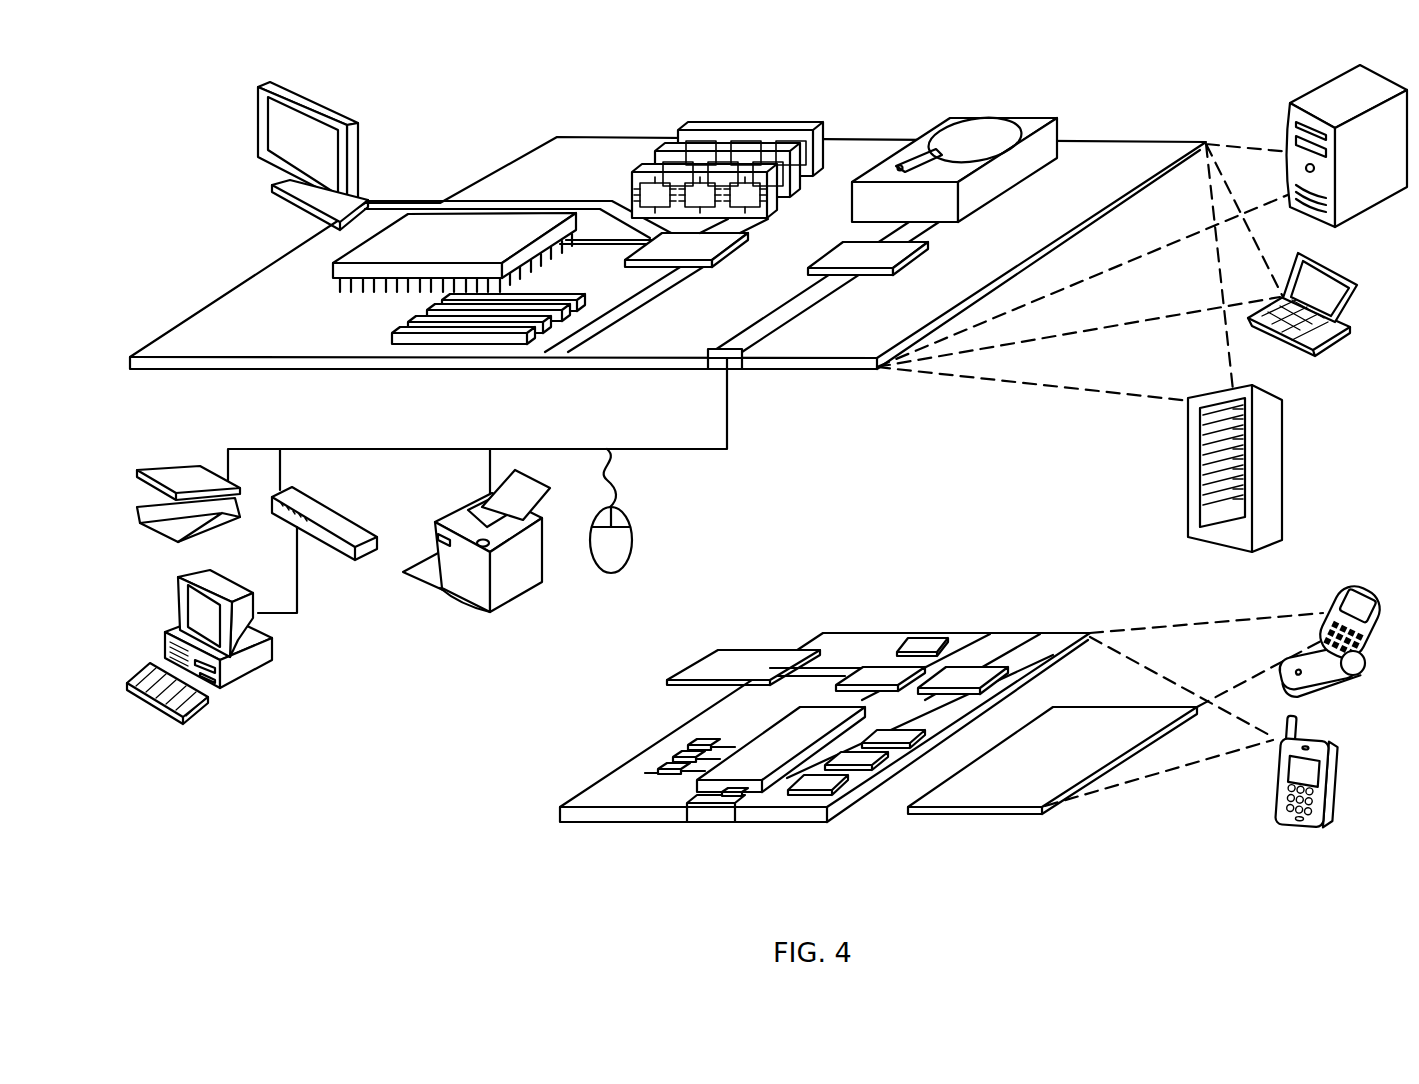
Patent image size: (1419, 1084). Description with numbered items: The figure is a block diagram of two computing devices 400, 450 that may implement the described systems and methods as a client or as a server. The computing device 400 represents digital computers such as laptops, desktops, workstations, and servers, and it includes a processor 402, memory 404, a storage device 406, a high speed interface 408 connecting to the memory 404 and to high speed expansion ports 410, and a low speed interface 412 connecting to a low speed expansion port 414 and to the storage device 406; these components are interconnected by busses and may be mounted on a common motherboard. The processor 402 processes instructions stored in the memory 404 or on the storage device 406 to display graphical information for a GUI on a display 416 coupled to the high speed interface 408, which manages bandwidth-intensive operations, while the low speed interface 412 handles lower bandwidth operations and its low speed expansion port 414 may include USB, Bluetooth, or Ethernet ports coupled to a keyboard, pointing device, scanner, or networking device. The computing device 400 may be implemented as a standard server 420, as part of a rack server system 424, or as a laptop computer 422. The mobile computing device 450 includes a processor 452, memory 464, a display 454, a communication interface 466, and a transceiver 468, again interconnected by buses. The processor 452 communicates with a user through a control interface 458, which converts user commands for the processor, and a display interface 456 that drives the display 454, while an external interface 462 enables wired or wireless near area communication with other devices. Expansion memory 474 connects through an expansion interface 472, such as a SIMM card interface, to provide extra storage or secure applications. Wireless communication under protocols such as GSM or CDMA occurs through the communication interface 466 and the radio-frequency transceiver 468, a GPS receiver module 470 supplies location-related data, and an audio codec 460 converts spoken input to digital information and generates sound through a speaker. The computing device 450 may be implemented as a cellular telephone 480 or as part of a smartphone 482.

The computing device 400 is at (478, 112).
The processor 402 is at (302, 268).
The memory 404 is at (690, 130).
The storage device 406 is at (940, 117).
The high speed interface 408 is at (652, 252).
The high speed expansion ports 410 is at (407, 327).
The low speed interface 412 is at (845, 252).
The low speed expansion port 414 is at (743, 359).
The display 416 is at (262, 86).
The standard server 420 is at (1290, 122).
The laptop computer 422 is at (1366, 290).
The rack server system 424 is at (1187, 495).
The computing device 450 is at (540, 816).
The processor 452 is at (750, 775).
The display 454 is at (1007, 794).
The display interface 456 is at (824, 788).
The control interface 458 is at (872, 764).
The audio codec 460 is at (888, 742).
The external interface 462 is at (713, 808).
The memory 464 is at (655, 767).
The communication interface 466 is at (880, 676).
The transceiver 468 is at (965, 675).
The GPS receiver module 470 is at (935, 632).
The expansion interface 472 is at (803, 648).
The expansion memory 474 is at (722, 650).
The cellular telephone 480 is at (1340, 584).
The smartphone 482 is at (1280, 777).